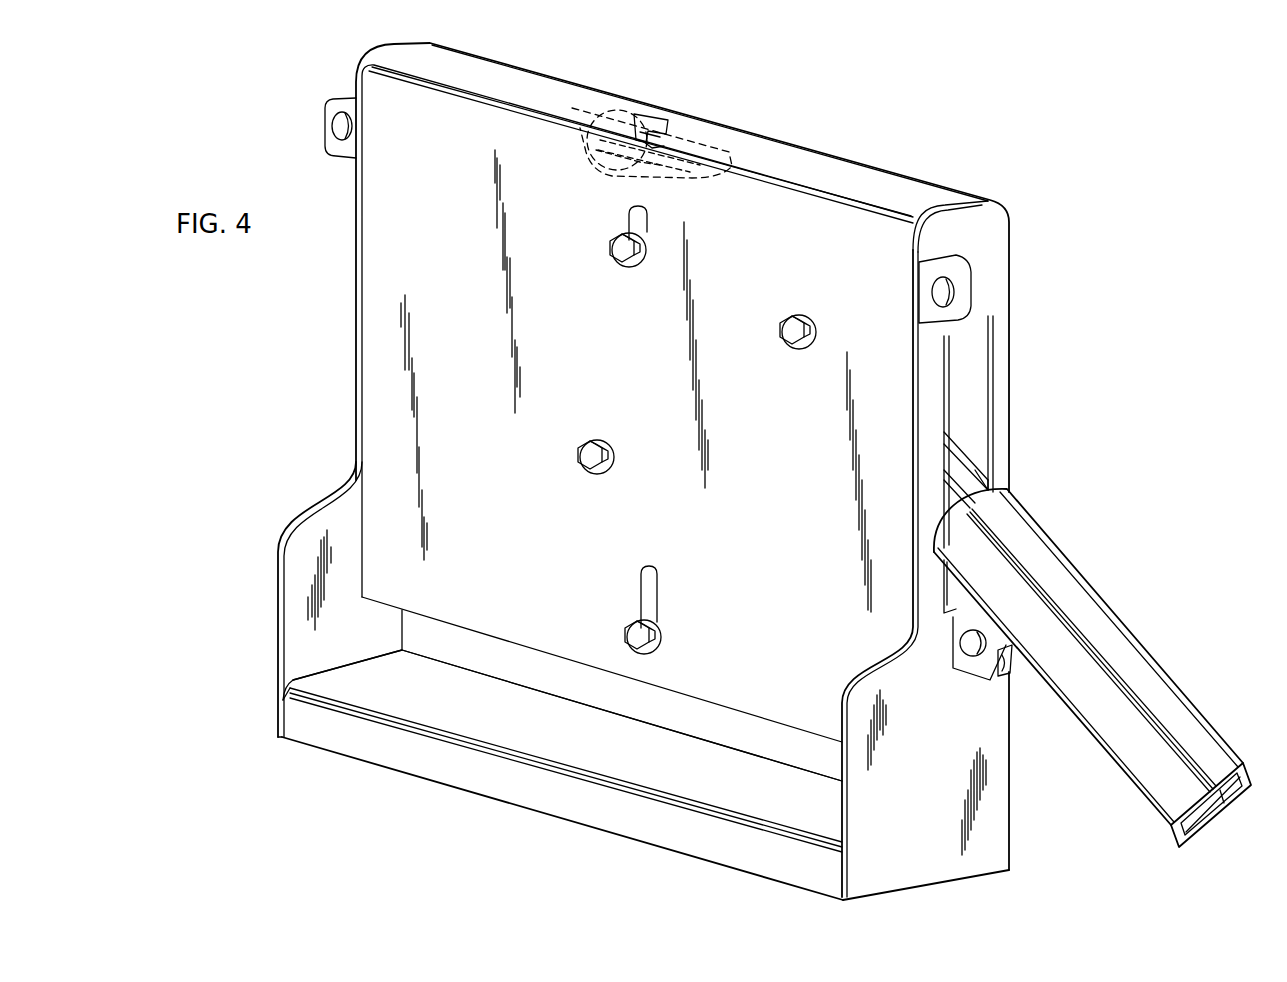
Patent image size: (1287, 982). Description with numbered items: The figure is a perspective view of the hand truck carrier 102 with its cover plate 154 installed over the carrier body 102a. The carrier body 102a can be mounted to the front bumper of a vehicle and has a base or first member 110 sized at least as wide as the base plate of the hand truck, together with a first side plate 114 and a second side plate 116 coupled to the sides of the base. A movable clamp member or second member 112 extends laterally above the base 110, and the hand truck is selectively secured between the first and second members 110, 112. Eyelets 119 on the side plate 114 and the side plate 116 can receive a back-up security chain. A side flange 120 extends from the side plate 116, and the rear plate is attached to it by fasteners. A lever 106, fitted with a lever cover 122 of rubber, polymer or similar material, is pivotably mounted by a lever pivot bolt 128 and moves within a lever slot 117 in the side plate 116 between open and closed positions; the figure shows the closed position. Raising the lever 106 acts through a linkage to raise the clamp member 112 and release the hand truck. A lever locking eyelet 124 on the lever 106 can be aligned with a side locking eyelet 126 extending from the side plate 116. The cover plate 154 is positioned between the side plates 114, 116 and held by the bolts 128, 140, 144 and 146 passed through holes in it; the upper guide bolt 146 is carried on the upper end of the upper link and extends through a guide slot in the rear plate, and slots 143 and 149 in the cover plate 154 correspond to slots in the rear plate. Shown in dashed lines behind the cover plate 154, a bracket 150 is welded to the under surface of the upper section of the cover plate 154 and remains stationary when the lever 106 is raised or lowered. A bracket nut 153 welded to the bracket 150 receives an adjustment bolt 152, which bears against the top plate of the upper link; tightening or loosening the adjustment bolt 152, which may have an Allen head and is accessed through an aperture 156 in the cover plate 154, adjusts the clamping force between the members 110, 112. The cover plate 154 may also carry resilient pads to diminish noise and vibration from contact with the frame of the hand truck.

The carrier 102 is at (1050, 170).
The carrier body 102a is at (992, 784).
The lever 106 is at (985, 472).
The base or first member 110 is at (436, 768).
The movable clamp member or second member 112 is at (466, 652).
The first side plate 114 is at (276, 583).
The second side plate 116 is at (992, 234).
The lever slot 117 is at (990, 378).
The eyelets 119 is at (326, 122).
The side flange 120 is at (972, 400).
The lever cover 122 is at (1186, 706).
The lever locking eyelet 124 is at (980, 680).
The side locking eyelet 126 is at (950, 636).
The lever pivot bolt 128 is at (785, 322).
The bolt 140 is at (628, 626).
The slot 143 is at (660, 594).
The bolt 144 is at (588, 440).
The upper guide bolt 146 is at (617, 246).
The slot 149 is at (646, 222).
The bracket 150 is at (724, 122).
The adjustment bolt 152 is at (608, 96).
The bracket nut 153 is at (592, 150).
The cover plate 154 is at (812, 155).
The aperture 156 is at (655, 110).